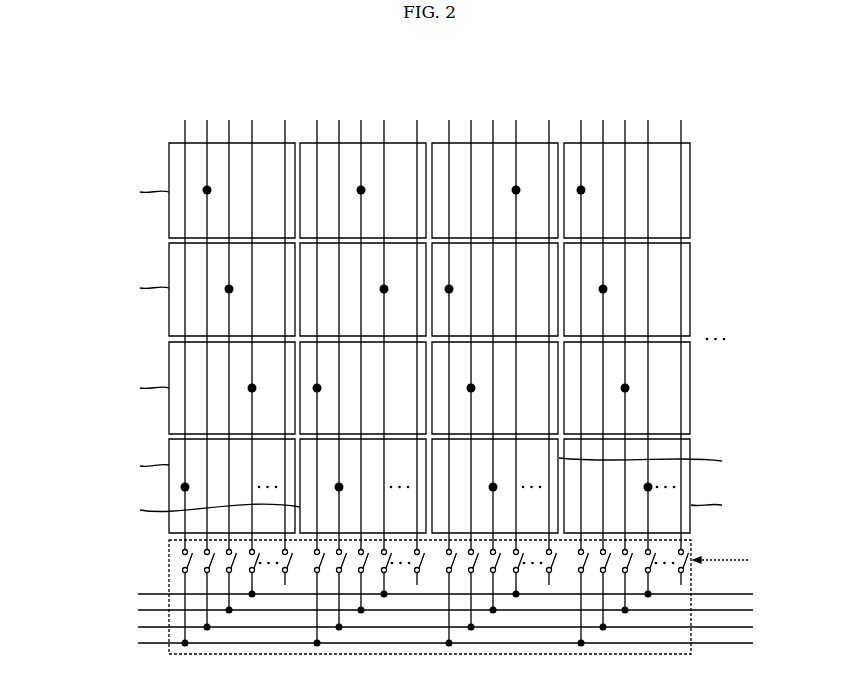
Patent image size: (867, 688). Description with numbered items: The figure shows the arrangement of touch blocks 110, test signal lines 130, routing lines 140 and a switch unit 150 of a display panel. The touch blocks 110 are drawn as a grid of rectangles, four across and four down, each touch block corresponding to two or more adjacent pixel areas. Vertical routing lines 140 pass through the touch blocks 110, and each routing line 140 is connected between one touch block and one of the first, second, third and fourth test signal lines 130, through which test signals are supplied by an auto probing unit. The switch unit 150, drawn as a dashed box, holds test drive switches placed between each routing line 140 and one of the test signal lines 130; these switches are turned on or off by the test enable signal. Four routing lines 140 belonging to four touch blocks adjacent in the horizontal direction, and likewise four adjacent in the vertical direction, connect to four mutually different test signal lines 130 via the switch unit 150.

The touch blocks 110 is at (67, 190).
The first, second, third and fourth test signal lines 130 is at (93, 594).
The routing line 140 is at (605, 312).
The switch unit 150 is at (169, 557).